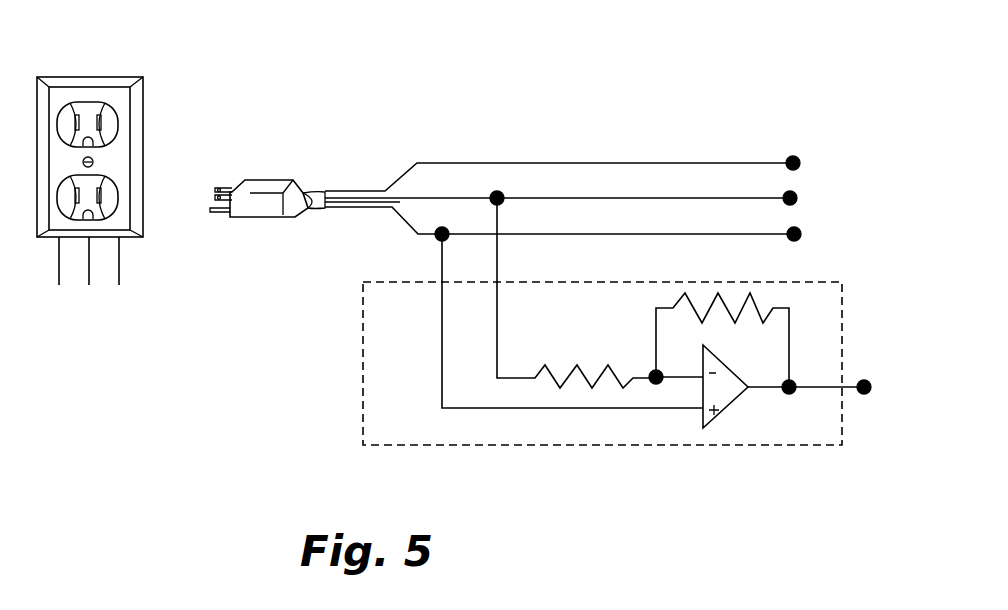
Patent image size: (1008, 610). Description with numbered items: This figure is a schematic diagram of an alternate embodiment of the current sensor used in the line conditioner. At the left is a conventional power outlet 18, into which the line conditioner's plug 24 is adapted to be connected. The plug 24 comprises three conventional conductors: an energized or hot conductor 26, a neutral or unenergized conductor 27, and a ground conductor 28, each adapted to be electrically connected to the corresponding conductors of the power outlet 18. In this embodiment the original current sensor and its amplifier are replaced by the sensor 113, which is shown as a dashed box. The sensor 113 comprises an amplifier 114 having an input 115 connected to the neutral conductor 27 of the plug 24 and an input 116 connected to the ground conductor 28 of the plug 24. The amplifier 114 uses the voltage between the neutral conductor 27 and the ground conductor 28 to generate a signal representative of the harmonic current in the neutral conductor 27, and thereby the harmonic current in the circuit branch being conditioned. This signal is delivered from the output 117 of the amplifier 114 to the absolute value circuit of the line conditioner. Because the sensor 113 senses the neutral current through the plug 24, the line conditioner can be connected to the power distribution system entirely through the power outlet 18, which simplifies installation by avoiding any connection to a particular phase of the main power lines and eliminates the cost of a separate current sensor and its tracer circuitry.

The power outlet 18 is at (88, 77).
The plug 24 is at (297, 128).
The hot conductor 26 is at (796, 157).
The neutral conductor 27 is at (797, 197).
The ground conductor 28 is at (797, 240).
The sensor 113 is at (363, 368).
The amplifier 114 is at (620, 345).
The input 115 is at (497, 268).
The input 116 is at (440, 265).
The output 117 is at (864, 393).